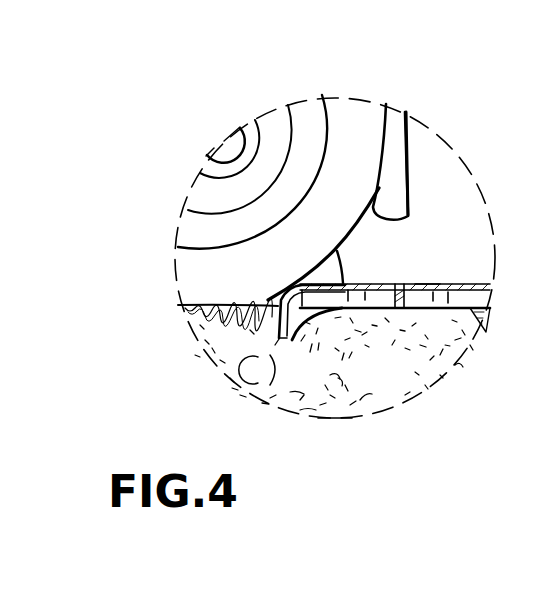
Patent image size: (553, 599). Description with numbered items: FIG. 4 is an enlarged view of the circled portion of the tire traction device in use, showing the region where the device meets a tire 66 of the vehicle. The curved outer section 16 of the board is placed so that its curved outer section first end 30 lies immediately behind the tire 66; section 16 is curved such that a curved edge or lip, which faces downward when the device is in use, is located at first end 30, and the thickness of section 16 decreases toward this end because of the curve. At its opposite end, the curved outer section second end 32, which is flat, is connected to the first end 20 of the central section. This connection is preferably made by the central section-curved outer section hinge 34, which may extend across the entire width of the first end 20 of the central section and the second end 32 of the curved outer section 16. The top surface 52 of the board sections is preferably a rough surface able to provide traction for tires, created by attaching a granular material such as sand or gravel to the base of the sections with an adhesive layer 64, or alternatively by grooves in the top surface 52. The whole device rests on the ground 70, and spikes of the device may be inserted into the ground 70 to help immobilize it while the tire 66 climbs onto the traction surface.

The tire 66 is at (342, 124).
The top surface 52 is at (337, 251).
The adhesive layer 64 is at (332, 283).
The central section-curved outer section hinge 34 is at (397, 291).
The first end of the central section 20 is at (408, 298).
The curved outer section second end 32 is at (381, 300).
The curved outer section first end 30 is at (258, 322).
The curved outer section 16 is at (323, 333).
The ground 70 is at (358, 360).